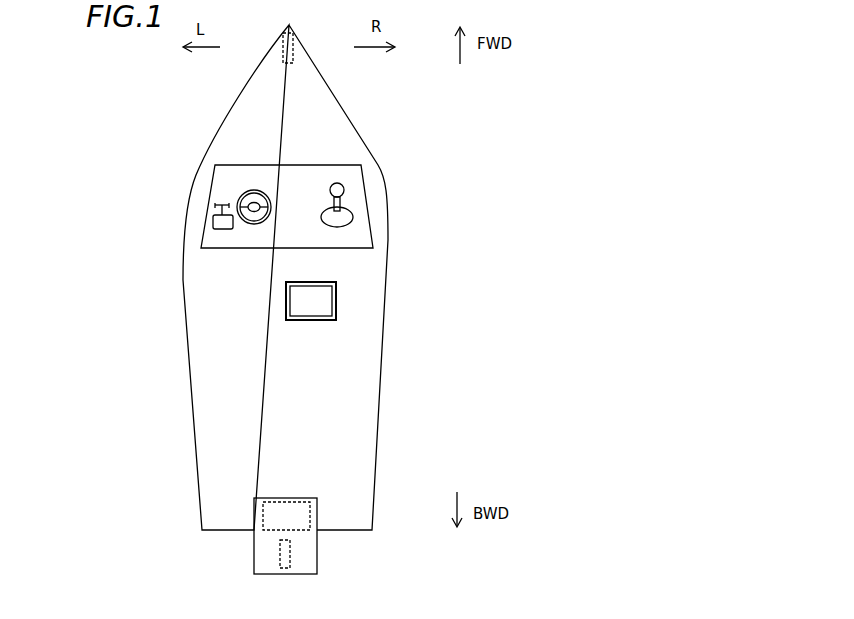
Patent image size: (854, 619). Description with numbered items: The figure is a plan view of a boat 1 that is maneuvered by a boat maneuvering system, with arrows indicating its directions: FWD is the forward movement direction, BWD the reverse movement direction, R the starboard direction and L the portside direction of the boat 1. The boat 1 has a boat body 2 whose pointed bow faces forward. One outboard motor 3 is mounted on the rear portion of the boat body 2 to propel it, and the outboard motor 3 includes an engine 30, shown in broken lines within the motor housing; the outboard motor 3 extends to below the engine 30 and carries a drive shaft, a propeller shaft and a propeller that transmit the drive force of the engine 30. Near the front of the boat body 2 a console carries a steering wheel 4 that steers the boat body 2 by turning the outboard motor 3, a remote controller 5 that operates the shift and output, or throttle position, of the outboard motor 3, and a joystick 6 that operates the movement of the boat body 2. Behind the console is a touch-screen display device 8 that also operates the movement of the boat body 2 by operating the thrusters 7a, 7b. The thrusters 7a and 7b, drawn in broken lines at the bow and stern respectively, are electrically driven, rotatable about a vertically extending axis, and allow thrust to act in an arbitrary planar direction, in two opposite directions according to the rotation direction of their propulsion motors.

The boat 1 is at (299, 277).
The boat body 2 is at (386, 305).
The outboard motor 3 is at (254, 553).
The steering wheel 4 is at (262, 224).
The remote controller 5 is at (231, 229).
The joystick 6 is at (343, 202).
The thruster 7a is at (294, 40).
The thruster 7b is at (291, 550).
The touch-screen display device 8 is at (286, 305).
The engine 30 is at (252, 515).